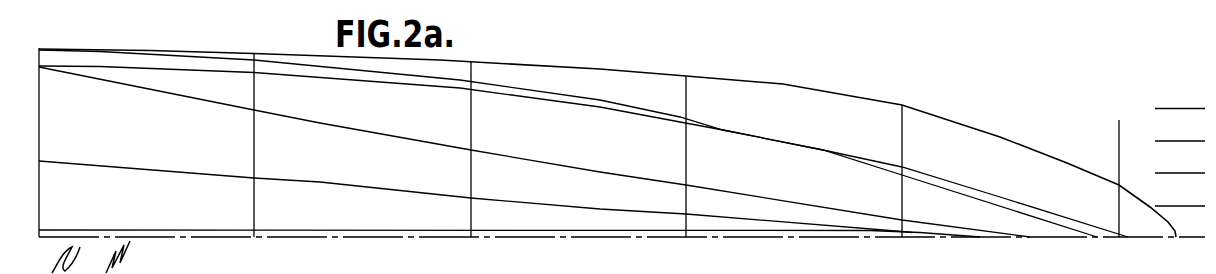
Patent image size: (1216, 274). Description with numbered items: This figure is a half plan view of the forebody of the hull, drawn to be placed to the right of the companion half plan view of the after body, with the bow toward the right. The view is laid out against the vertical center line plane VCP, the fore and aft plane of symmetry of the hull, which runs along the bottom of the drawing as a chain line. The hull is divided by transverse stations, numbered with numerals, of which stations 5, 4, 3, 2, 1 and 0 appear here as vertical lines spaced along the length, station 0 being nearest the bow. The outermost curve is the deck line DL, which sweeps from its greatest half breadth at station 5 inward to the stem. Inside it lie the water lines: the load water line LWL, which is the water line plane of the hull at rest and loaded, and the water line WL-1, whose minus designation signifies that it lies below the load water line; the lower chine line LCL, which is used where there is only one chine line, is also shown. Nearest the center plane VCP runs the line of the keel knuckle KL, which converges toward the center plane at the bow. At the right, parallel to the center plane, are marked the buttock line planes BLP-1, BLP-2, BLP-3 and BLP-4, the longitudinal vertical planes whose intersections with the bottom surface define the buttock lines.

The deck line DL is at (789, 73).
The lower chine line LCL is at (523, 97).
The load water line LWL is at (413, 137).
The water line WL-1 is at (302, 167).
The keel knuckle line KL is at (377, 229).
The vertical center line plane VCP is at (392, 238).
The buttock line plane 1 BLP-1 is at (1180, 199).
The buttock line plane 2 BLP-2 is at (1180, 165).
The buttock line plane 3 BLP-3 is at (1180, 134).
The buttock line plane 4 BLP-4 is at (1180, 102).
The station 0 is at (1119, 189).
The station 1 is at (902, 181).
The station 2 is at (686, 167).
The station 3 is at (471, 159).
The station 4 is at (254, 156).
The station 5 is at (39, 153).